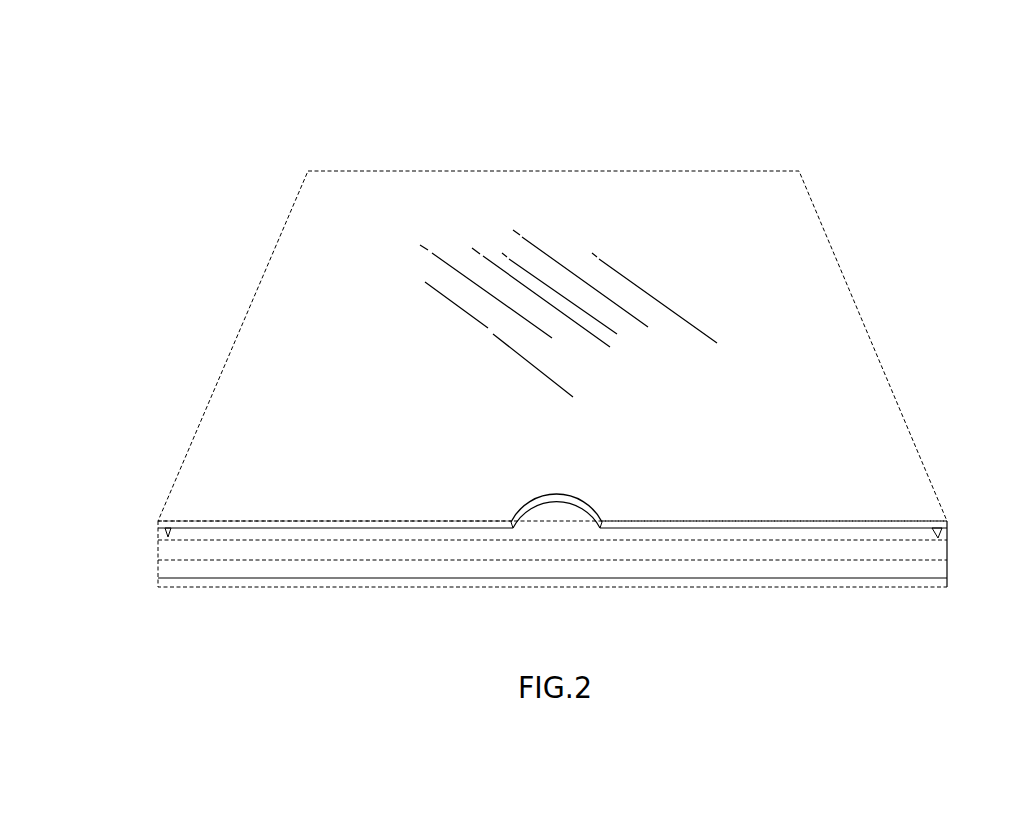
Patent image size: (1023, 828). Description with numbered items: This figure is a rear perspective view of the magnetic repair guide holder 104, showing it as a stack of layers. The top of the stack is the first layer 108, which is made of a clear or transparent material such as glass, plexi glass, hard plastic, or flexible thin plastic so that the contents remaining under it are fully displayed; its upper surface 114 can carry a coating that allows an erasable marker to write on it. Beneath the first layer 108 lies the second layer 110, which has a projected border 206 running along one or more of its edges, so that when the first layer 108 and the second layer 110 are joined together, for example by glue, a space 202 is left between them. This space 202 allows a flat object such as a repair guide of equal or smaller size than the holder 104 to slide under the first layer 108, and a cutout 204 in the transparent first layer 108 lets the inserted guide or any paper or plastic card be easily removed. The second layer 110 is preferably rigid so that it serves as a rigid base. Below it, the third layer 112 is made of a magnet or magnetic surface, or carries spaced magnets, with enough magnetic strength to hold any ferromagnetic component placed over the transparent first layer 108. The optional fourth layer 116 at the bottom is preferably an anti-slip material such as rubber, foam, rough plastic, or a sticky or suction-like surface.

The magnetic repair guide holder 104 is at (845, 152).
The upper surface 114 is at (773, 343).
The first layer 108 is at (167, 530).
The second layer 110 is at (169, 549).
The third layer 112 is at (171, 571).
The fourth layer 116 is at (181, 585).
The space 202 is at (920, 532).
The cutout 204 is at (556, 500).
The projected border 206 is at (946, 532).